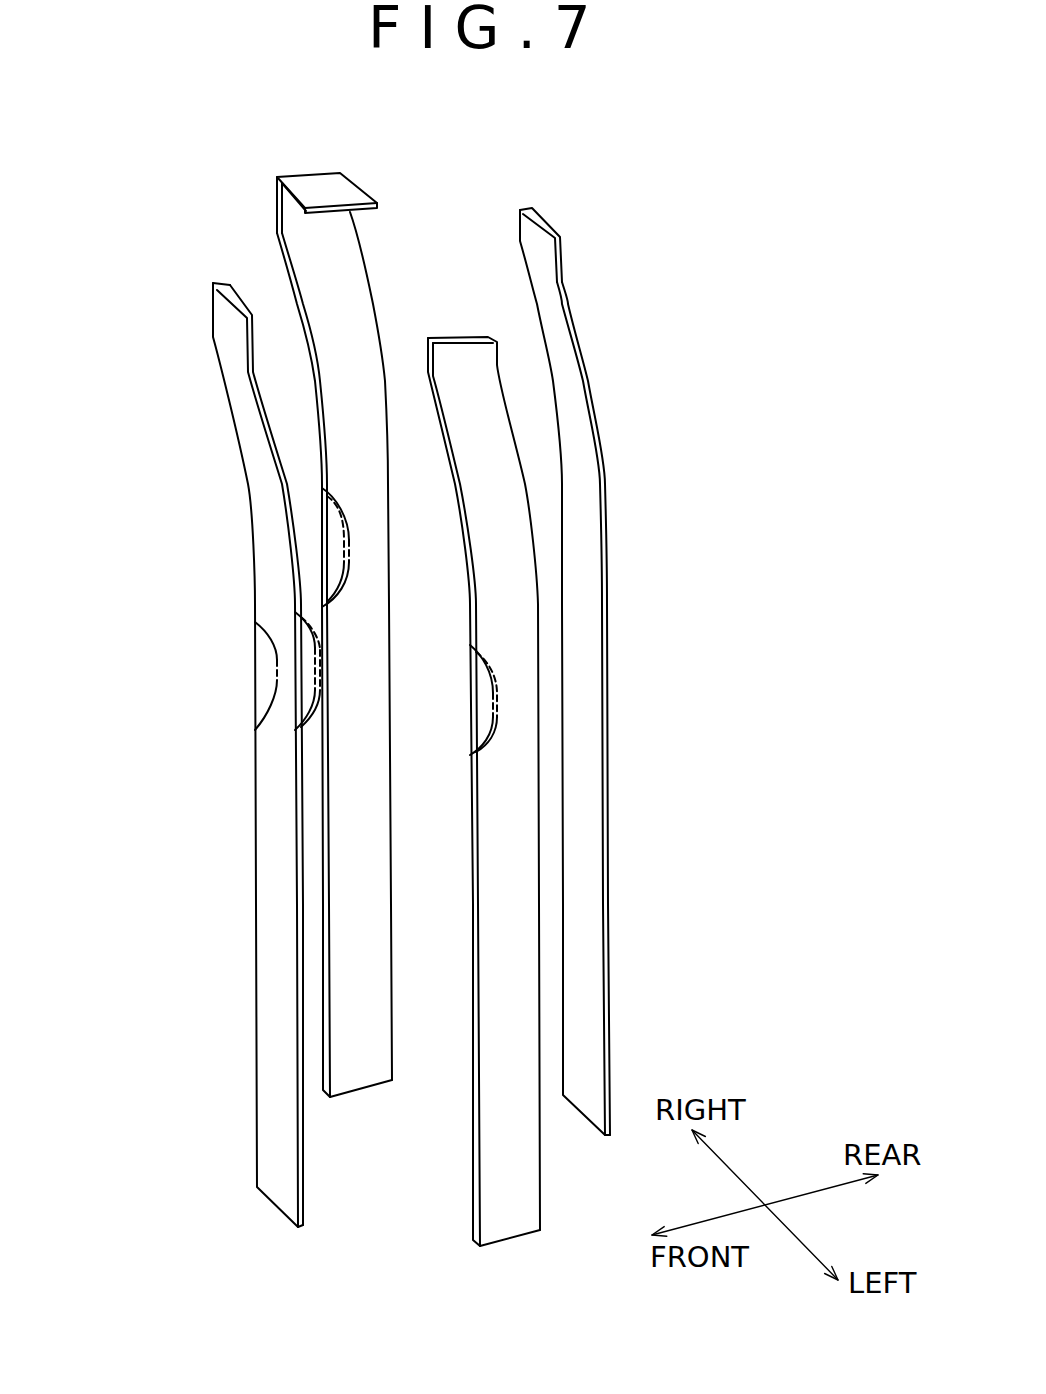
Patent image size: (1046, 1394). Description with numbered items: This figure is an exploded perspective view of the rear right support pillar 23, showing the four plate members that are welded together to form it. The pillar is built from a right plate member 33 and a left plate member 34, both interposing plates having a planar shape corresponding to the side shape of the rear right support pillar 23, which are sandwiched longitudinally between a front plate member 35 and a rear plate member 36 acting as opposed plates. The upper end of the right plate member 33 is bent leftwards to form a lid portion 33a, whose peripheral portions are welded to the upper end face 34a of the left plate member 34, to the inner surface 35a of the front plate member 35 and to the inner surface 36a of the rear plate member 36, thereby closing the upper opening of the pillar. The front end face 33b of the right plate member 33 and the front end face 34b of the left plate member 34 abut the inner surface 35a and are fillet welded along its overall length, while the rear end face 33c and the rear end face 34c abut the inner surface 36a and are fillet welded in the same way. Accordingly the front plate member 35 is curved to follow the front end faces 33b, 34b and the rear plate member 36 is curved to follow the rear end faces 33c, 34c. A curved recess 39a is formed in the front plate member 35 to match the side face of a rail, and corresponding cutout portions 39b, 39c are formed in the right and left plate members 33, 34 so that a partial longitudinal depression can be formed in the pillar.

The rear right support pillar 23 is at (137, 233).
The right plate member 33 is at (365, 1072).
The lid portion 33a is at (352, 194).
The front end face 33b is at (283, 258).
The rear end face 33c is at (367, 260).
The left plate member 34 is at (512, 1216).
The upper end face 34a is at (465, 337).
The front end face 34b is at (470, 1022).
The rear end face 34c is at (540, 1187).
The front plate member 35 is at (281, 1180).
The inner surface 35a is at (257, 338).
The rear plate member 36 is at (587, 1103).
The inner surface 36a is at (543, 240).
The curved recess 39a is at (276, 672).
The cutout portion 39b is at (352, 548).
The cutout portion 39c is at (494, 708).